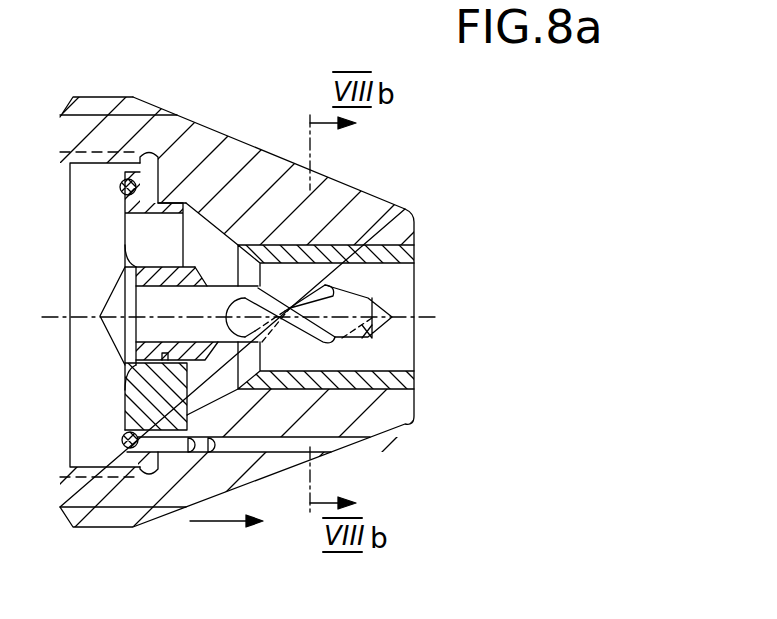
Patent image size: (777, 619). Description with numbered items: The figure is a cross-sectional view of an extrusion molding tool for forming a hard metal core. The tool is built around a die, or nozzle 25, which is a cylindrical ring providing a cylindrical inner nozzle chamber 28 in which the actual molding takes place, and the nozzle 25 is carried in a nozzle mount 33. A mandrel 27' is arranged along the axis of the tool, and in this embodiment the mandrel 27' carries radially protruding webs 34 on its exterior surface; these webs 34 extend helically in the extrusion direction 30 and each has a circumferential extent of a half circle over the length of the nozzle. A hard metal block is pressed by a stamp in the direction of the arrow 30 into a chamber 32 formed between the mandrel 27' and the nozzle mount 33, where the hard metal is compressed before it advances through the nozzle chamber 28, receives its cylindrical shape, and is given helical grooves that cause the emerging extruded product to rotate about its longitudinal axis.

The nozzle 25 is at (390, 240).
The mandrel 27' is at (201, 237).
The inner nozzle chamber 28 is at (398, 288).
The extrusion direction 30 is at (217, 521).
The chamber 32 is at (205, 243).
The nozzle mount 33 is at (357, 210).
The webs 34 is at (372, 338).